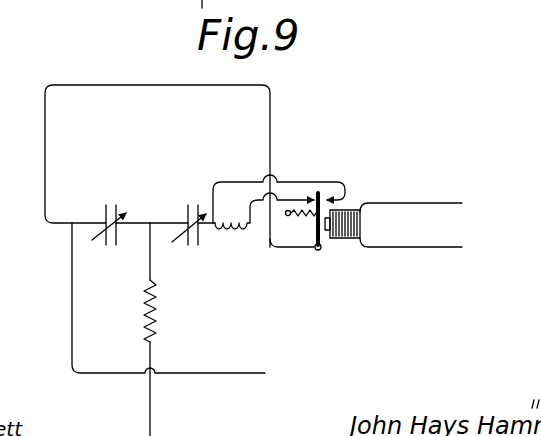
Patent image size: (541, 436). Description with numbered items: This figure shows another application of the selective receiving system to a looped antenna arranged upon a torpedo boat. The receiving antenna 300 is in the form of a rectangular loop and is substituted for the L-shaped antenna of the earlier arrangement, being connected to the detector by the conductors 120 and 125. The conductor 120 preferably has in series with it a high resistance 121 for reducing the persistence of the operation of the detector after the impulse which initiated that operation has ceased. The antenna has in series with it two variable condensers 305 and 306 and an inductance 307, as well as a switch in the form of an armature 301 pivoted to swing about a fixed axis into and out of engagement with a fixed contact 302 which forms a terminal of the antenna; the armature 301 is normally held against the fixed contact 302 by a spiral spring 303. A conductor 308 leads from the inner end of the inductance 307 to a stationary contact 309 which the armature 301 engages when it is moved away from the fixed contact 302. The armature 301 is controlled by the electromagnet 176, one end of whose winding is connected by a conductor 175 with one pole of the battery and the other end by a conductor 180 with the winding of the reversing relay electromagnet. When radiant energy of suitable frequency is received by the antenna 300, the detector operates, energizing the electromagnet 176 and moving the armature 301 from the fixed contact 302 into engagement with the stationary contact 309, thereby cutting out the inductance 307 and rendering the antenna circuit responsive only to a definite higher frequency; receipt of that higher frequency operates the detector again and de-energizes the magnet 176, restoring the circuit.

The receiving antenna 300 is at (272, 112).
The variable condenser 306 is at (113, 208).
The variable condenser 305 is at (193, 208).
The inductance 307 is at (264, 224).
The conductor 308 is at (240, 175).
The fixed contact 302 is at (315, 197).
The stationary contact 309 is at (328, 199).
The spiral spring 303 is at (296, 228).
The armature 301 is at (316, 250).
The electromagnet 176 is at (349, 239).
The conductor 180 is at (438, 201).
The conductor 175 is at (430, 248).
The conductor 120 is at (150, 264).
The high resistance 121 is at (156, 306).
The conductor 125 is at (72, 288).